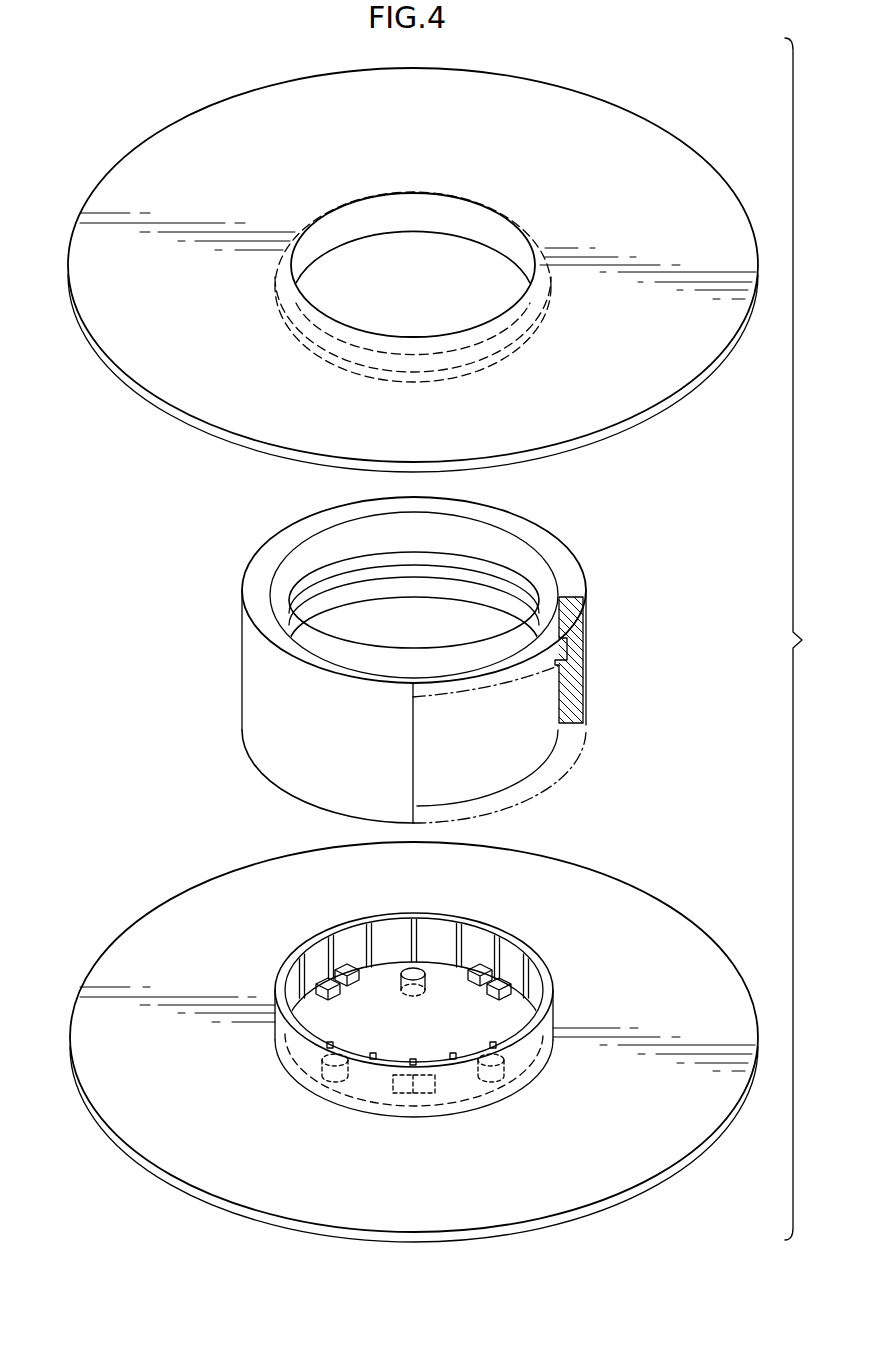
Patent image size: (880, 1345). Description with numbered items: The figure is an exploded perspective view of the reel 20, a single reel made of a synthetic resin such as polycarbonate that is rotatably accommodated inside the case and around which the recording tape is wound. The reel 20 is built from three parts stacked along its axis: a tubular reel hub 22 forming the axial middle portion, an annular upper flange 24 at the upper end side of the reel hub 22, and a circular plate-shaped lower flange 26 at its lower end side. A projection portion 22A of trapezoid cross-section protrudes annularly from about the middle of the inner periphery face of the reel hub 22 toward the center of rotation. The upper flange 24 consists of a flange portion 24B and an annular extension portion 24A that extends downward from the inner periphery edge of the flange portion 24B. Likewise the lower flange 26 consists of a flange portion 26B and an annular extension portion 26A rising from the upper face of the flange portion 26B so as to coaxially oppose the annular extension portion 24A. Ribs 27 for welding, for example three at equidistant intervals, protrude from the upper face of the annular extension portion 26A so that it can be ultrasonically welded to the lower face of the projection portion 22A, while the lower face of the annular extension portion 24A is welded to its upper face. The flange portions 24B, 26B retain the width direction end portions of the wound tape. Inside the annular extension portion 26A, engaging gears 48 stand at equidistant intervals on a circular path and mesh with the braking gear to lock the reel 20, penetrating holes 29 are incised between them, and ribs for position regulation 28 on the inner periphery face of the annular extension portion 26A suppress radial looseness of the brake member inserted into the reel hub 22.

The reel 20 is at (656, 94).
The upper flange 24 is at (413, 263).
The annular extension portion 24A is at (418, 212).
The flange portion 24B is at (676, 158).
The reel hub 22 is at (437, 660).
The projection portion 22A is at (478, 607).
The lower flange 26 is at (416, 1042).
The annular extension portion 26A is at (552, 1018).
The flange portion 26B is at (674, 932).
The ribs for position regulation 28 is at (538, 963).
The ribs for welding 27 is at (316, 940).
The engaging gears 48 is at (345, 962).
The penetrating holes 29 is at (412, 975).